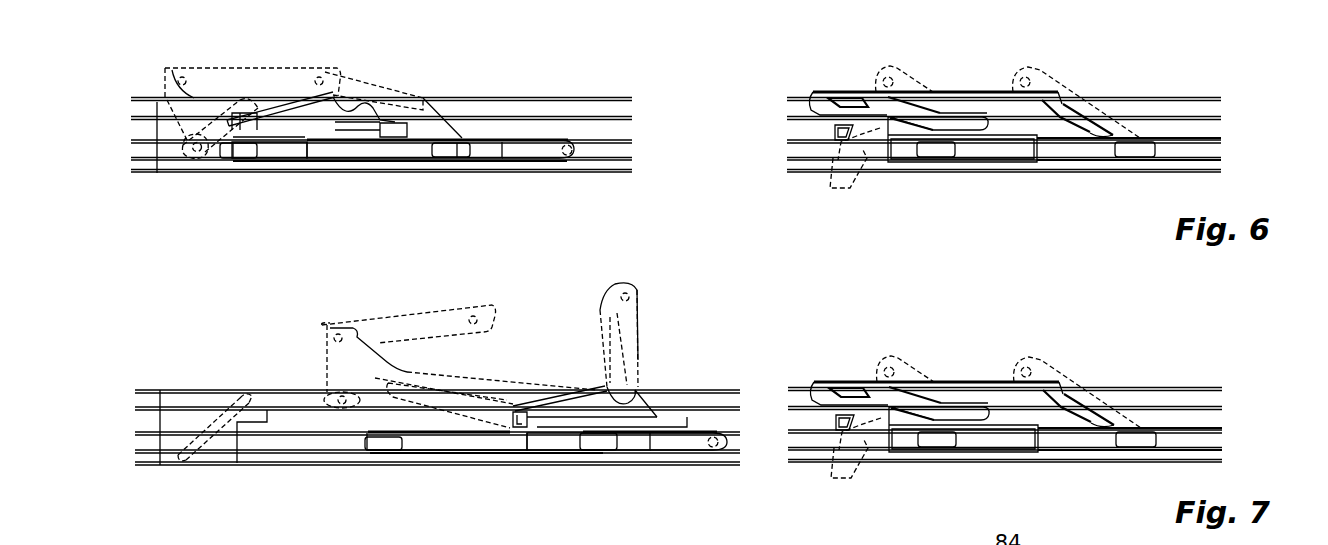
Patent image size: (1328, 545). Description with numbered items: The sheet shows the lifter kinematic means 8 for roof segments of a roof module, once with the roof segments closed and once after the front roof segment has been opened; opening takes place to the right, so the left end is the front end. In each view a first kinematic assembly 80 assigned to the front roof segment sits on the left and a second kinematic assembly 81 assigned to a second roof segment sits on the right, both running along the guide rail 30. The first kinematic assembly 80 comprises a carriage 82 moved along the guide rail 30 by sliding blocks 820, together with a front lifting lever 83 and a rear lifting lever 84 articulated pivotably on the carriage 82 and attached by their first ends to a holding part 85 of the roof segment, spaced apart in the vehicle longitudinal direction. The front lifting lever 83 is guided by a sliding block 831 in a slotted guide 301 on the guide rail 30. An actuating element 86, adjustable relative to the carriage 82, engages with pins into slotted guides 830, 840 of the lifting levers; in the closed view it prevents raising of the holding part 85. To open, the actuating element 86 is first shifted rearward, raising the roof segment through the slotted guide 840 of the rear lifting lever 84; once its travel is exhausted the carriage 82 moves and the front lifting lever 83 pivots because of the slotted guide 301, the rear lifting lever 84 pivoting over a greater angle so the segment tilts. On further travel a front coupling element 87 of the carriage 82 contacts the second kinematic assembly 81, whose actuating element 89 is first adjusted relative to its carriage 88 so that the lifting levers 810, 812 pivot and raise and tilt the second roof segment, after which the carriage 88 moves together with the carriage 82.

In FIG. 6, the lifter kinematic means 8 is at (118, 191).
In FIG. 7, the lifter kinematic means 8 is at (107, 471).
In FIG. 6, the guide rail 30 is at (607, 150).
In FIG. 7, the guide rail 30 is at (733, 447).
In FIG. 7, the slotted guide 301 is at (233, 395).
In FIG. 6, the first kinematic assembly 80 is at (475, 78).
In FIG. 7, the first kinematic assembly 80 is at (688, 318).
In FIG. 6, the second kinematic assembly 81 is at (1136, 80).
In FIG. 7, the second kinematic assembly 81 is at (1098, 366).
In FIG. 6, the carriage 82 is at (360, 150).
In FIG. 7, the carriage 82 is at (448, 442).
In FIG. 6, the sliding blocks 820 is at (243, 153).
In FIG. 7, the sliding blocks 820 is at (377, 443).
In FIG. 6, the front lifting lever 83 is at (188, 107).
In FIG. 7, the front lifting lever 83 is at (337, 372).
In FIG. 7, the slotted guide 830 is at (445, 398).
In FIG. 6, the sliding block 831 is at (188, 163).
In FIG. 7, the sliding block 831 is at (340, 437).
In FIG. 6, the rear lifting lever 84 is at (370, 88).
In FIG. 7, the rear lifting lever 84 is at (628, 312).
In FIG. 7, the slotted guide 840 is at (610, 322).
In FIG. 6, the holding part 85 is at (243, 82).
In FIG. 7, the holding part 85 is at (412, 325).
In FIG. 6, the actuating element 86 is at (292, 150).
In FIG. 7, the actuating element 86 is at (545, 442).
In FIG. 6, the front coupling element 87 is at (543, 148).
In FIG. 7, the front coupling element 87 is at (672, 443).
In FIG. 6, the carriage 88 is at (1090, 148).
In FIG. 7, the carriage 88 is at (1070, 465).
In FIG. 6, the actuating element 89 is at (993, 163).
In FIG. 7, the actuating element 89 is at (963, 465).
In FIG. 6, the lifting lever 810 is at (905, 87).
In FIG. 7, the lifting lever 810 is at (920, 347).
In FIG. 6, the lifting lever 812 is at (1043, 82).
In FIG. 7, the lifting lever 812 is at (1077, 368).